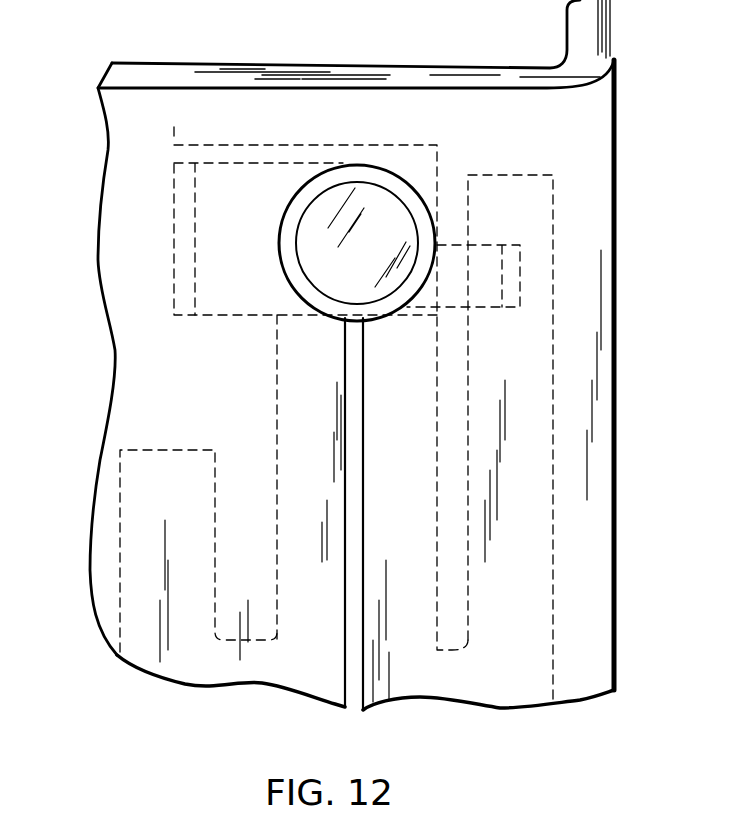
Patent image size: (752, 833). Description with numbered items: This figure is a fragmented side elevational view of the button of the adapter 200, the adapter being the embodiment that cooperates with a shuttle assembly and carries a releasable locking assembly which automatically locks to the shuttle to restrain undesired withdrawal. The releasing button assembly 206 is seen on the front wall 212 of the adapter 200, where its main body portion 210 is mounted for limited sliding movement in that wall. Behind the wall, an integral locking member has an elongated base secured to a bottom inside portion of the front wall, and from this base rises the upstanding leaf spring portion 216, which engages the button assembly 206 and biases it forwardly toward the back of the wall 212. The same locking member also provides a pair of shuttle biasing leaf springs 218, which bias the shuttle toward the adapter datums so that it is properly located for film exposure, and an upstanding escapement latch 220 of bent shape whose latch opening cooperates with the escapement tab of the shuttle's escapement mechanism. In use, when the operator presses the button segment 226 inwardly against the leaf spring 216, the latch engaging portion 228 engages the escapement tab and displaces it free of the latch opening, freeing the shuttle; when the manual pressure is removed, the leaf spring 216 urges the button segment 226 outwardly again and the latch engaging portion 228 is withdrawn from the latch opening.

The adapter 200 is at (552, 39).
The releasing button assembly 206 is at (345, 160).
The main body portion 210 is at (244, 172).
The front wall 212 is at (118, 345).
The upstanding leaf spring portion 216 is at (174, 153).
The shuttle biasing leaf springs 218 is at (140, 456).
The escapement latch 220 is at (487, 182).
The button segment 226 is at (331, 290).
The latch engaging portion 228 is at (520, 258).